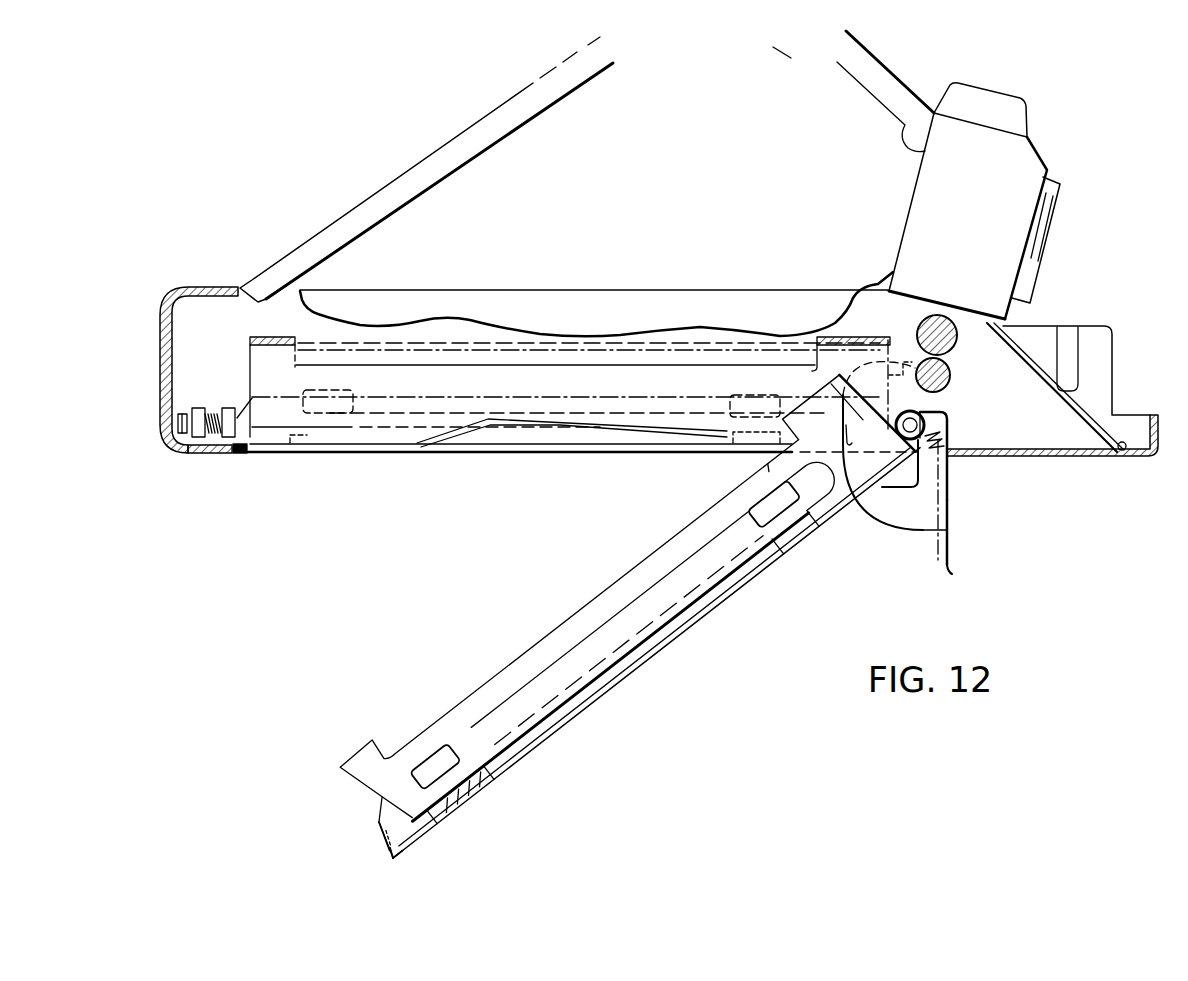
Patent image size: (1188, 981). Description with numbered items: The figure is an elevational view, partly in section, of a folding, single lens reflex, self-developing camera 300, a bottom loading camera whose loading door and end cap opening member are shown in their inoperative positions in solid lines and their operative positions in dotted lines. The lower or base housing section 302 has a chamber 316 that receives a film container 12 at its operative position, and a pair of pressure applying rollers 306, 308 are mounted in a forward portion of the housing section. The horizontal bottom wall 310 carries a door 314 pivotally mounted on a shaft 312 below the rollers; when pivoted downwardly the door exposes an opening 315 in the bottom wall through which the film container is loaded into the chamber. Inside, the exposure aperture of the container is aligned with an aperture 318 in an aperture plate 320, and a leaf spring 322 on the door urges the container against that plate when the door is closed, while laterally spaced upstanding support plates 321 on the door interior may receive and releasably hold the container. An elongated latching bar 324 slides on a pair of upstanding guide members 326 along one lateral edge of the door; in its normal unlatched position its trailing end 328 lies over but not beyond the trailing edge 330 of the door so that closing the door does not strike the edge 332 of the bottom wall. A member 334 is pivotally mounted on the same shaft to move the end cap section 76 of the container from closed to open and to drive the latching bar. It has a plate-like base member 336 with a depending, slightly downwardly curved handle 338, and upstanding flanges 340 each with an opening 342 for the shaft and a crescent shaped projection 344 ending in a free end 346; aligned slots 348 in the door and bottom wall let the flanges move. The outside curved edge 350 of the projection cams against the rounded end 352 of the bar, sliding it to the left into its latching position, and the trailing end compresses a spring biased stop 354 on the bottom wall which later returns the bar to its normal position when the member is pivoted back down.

The film container 12 is at (250, 362).
The end cap section 76 is at (909, 342).
The camera 300 is at (1063, 302).
The housing section 302 is at (1098, 467).
The pressure applying roller 306 is at (957, 339).
The pressure applying roller 308 is at (955, 377).
The bottom wall 310 is at (198, 455).
The shaft 312 is at (923, 421).
The door 314 is at (690, 637).
The opening 315 is at (537, 453).
The chamber 316 is at (220, 367).
The aperture 318 is at (312, 333).
The aperture plate 320 is at (277, 334).
The support plate 321 is at (465, 702).
The leaf spring 322 is at (552, 723).
The latching bar 324 is at (522, 698).
The guide member 326 is at (770, 500).
The trailing end 328 is at (383, 843).
The trailing edge 330 is at (391, 858).
The edge 332 is at (244, 455).
The member 334 is at (953, 527).
The base member 336 is at (948, 509).
The handle 338 is at (945, 570).
The flange 340 is at (936, 488).
The opening 342 is at (909, 411).
The crescent shaped projection 344 is at (925, 533).
The free end 346 is at (846, 430).
The slot 348 is at (945, 438).
The curved edge 350 is at (901, 531).
The rounded end 352 is at (835, 497).
The spring biased stop 354 is at (232, 407).